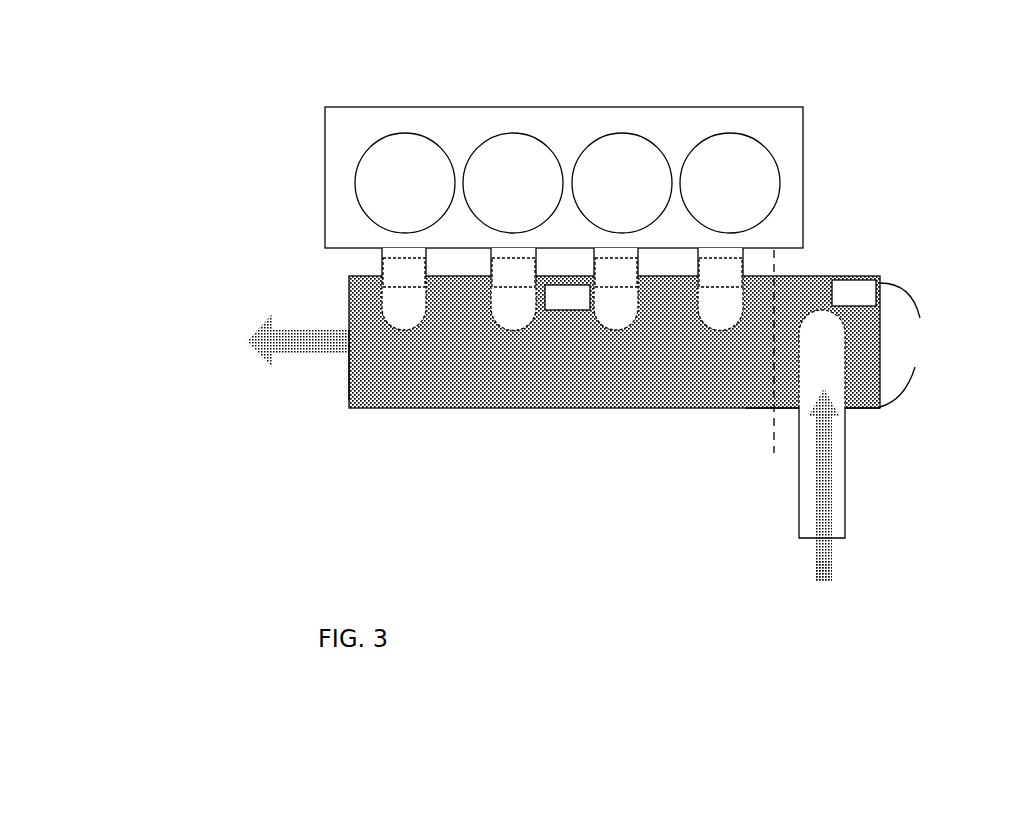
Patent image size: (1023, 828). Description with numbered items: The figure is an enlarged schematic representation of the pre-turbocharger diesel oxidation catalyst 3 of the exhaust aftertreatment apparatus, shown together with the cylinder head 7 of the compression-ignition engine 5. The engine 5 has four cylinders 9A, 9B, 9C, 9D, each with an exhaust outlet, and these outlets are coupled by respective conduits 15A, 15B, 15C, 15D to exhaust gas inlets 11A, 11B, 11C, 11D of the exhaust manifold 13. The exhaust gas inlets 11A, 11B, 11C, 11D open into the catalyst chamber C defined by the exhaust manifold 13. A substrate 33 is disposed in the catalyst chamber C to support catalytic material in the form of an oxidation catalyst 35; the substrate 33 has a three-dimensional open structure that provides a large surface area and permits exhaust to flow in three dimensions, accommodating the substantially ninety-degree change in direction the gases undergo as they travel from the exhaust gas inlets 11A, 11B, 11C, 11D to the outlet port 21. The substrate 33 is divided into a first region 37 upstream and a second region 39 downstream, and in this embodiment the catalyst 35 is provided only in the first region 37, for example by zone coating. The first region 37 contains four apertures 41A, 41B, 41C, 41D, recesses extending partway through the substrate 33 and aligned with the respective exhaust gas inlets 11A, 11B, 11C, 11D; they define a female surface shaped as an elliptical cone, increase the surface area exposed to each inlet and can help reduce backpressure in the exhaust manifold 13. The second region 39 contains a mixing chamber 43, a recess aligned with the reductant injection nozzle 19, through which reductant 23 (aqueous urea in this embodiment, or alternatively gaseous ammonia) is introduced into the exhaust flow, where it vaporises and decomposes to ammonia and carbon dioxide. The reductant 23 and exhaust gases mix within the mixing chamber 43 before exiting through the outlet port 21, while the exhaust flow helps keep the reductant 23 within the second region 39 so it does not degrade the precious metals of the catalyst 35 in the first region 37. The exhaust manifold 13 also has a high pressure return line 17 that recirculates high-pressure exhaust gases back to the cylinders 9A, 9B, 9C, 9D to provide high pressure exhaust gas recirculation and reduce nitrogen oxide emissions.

The pre-turbocharger diesel oxidation catalyst 3 is at (300, 462).
The engine 5 is at (580, 148).
The cylinder head 7 is at (325, 206).
The cylinder 9A is at (392, 194).
The cylinder 9B is at (500, 194).
The cylinder 9C is at (609, 194).
The cylinder 9D is at (717, 194).
The exhaust gas inlet 11A is at (354, 387).
The exhaust gas inlet 11B is at (463, 387).
The exhaust gas inlet 11C is at (567, 387).
The exhaust gas inlet 11D is at (670, 387).
The exhaust manifold 13 is at (897, 252).
The conduit 15A is at (389, 281).
The conduit 15B is at (498, 281).
The conduit 15C is at (601, 281).
The conduit 15D is at (705, 281).
The high pressure return line 17 is at (308, 355).
The reductant injection nozzle 19 is at (860, 410).
The outlet port 21 is at (897, 368).
The reductant 23 is at (826, 565).
The substrate 33 is at (818, 296).
The oxidation catalyst 35 is at (708, 333).
The first region 37 is at (557, 308).
The second region 39 is at (843, 304).
The aperture 41A is at (396, 313).
The aperture 41B is at (504, 313).
The aperture 41C is at (609, 313).
The aperture 41D is at (712, 313).
The mixing chamber 43 is at (818, 353).
The catalyst chamber C is at (348, 380).